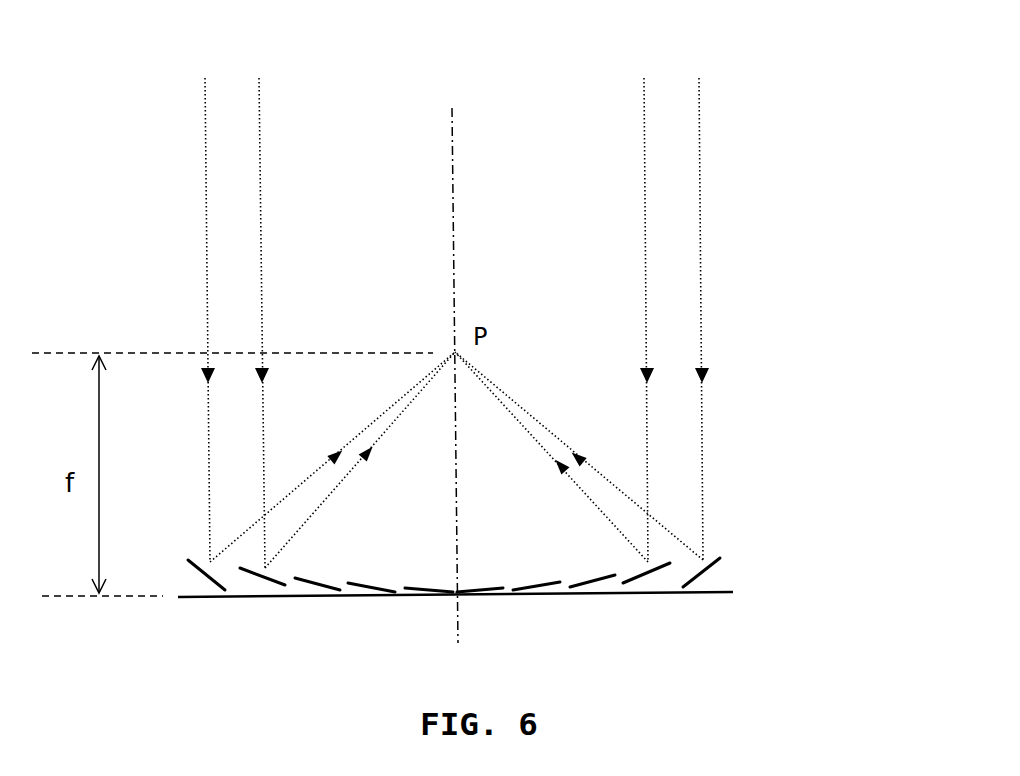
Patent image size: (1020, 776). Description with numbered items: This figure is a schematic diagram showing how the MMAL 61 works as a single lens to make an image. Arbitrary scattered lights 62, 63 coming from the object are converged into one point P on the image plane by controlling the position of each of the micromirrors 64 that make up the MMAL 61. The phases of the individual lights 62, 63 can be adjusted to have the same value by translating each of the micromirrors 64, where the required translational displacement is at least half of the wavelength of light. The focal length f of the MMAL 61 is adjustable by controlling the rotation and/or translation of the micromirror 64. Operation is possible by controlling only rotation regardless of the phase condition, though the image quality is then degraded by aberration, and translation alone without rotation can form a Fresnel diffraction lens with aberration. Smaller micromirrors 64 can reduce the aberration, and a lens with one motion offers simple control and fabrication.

The MMAL 61 is at (772, 577).
The scattered light 62 is at (628, 103).
The scattered light 63 is at (715, 148).
The micromirror 64 is at (197, 573).